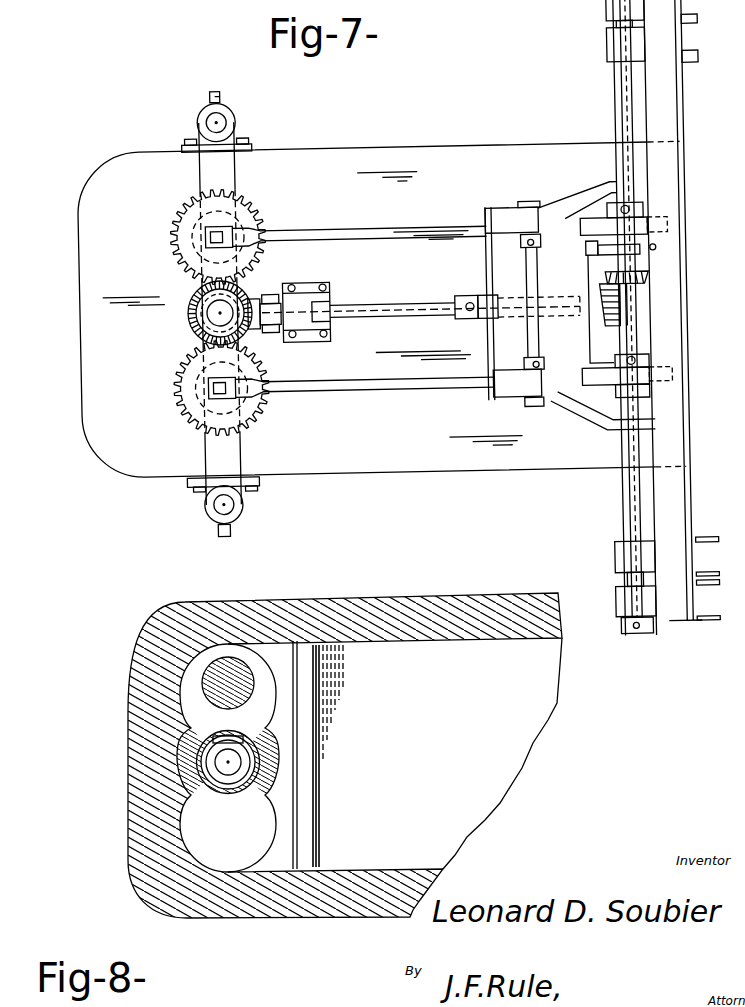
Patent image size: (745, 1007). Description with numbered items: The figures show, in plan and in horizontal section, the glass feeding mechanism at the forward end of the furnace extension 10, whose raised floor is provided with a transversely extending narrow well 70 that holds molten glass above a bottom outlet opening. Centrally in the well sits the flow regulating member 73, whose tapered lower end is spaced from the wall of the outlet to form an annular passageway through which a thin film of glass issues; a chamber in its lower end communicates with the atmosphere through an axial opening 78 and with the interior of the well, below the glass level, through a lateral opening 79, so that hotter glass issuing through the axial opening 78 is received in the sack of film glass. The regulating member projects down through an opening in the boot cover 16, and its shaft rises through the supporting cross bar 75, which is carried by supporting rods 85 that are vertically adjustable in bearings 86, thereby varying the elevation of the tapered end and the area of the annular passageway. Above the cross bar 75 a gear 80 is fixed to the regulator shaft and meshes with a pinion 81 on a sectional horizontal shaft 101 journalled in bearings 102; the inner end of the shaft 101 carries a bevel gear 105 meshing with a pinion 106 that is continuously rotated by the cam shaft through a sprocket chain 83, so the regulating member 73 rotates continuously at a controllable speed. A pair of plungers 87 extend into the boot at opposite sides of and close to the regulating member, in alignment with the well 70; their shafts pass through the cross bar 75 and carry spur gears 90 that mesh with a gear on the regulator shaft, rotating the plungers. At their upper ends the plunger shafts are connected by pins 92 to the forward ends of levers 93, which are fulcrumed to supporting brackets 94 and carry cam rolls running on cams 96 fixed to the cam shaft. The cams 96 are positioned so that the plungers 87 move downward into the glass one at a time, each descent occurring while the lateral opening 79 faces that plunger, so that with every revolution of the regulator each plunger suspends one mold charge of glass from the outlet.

In FIG. 7, the boot cover 16 is at (374, 433).
In FIG. 7, the supporting cross bar 75 is at (230, 170).
In FIG. 7, the supporting rods 85 is at (205, 117).
In FIG. 7, the bearings 86 is at (238, 113).
In FIG. 7, the spur gears 90 is at (254, 206).
In FIG. 7, the pins 92 is at (222, 246).
In FIG. 7, the gear 80 is at (197, 300).
In FIG. 7, the pinion 81 is at (252, 298).
In FIG. 7, the levers 93 is at (350, 227).
In FIG. 7, the bearings 102 is at (313, 283).
In FIG. 7, the sectional horizontal shaft 101 is at (390, 304).
In FIG. 7, the supporting brackets 94 is at (489, 265).
In FIG. 7, the cams 96 is at (590, 222).
In FIG. 7, the sprocket chain 83 is at (598, 254).
In FIG. 7, the pinion 106 is at (607, 278).
In FIG. 7, the bevel gear 105 is at (608, 325).
In FIG. 8, the furnace extension 10 is at (438, 600).
In FIG. 8, the well 70 is at (225, 847).
In FIG. 8, the plungers 87 is at (250, 668).
In FIG. 8, the flow regulating member 73 is at (244, 741).
In FIG. 8, the lateral opening 79 is at (226, 737).
In FIG. 8, the axial opening 78 is at (226, 770).